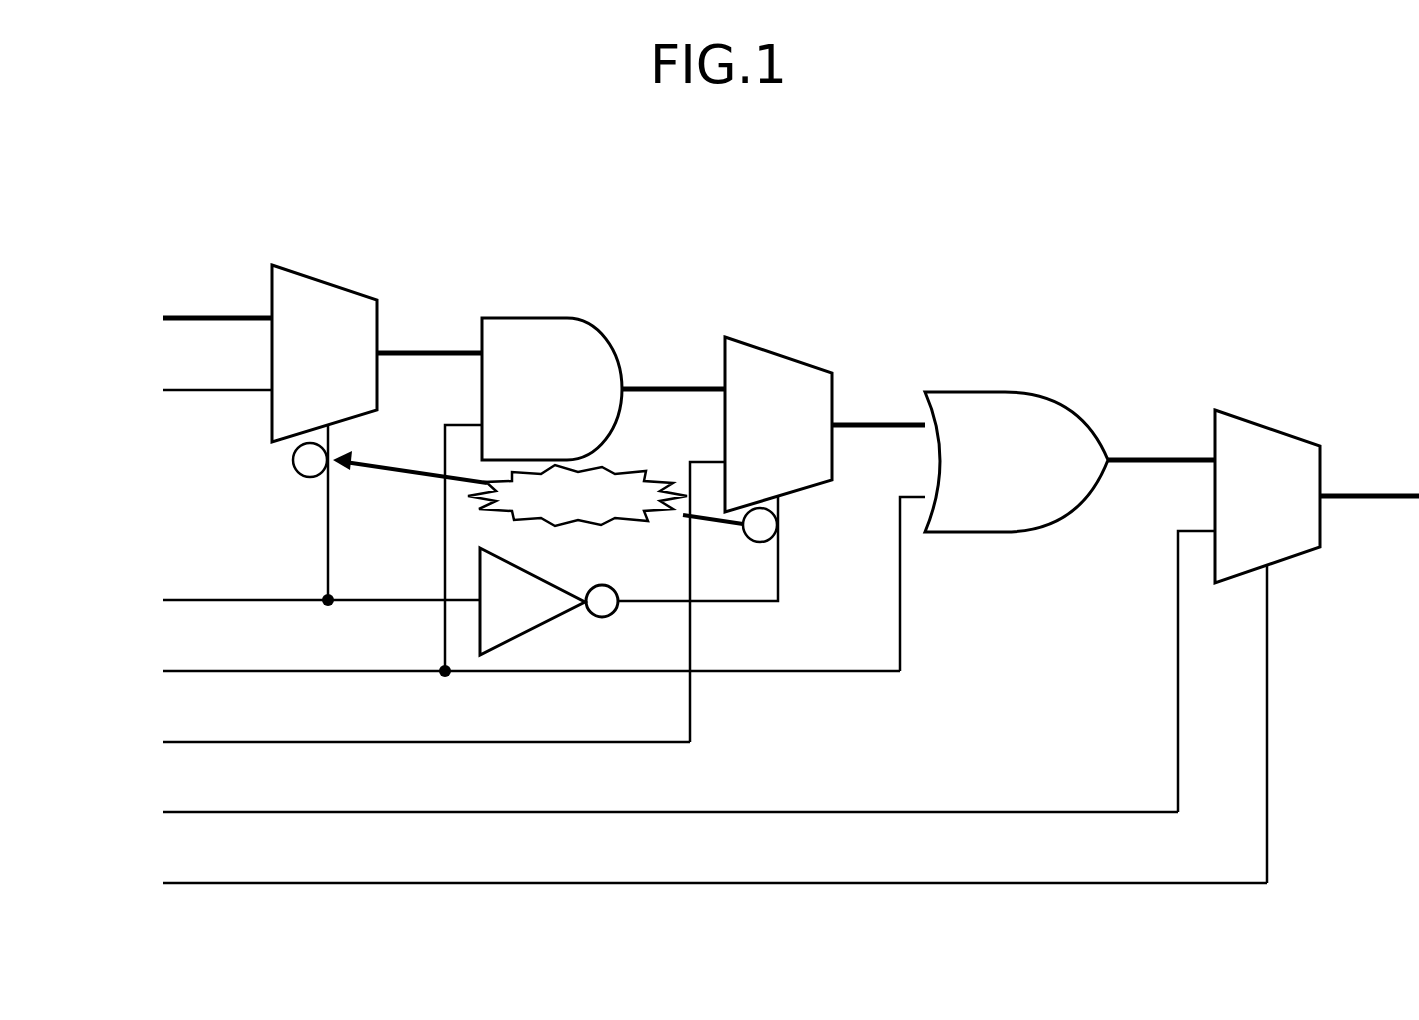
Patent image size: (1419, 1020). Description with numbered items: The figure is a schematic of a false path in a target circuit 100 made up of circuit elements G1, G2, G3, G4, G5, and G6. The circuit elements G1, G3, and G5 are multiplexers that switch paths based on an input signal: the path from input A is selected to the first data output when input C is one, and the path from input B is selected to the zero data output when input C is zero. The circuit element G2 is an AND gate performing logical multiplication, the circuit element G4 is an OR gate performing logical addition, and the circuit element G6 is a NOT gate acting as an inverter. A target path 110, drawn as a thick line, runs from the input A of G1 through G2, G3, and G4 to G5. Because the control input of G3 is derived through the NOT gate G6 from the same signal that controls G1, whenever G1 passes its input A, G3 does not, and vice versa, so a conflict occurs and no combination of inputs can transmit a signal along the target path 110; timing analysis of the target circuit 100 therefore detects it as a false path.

The target circuit 100 is at (1318, 263).
The target path 110 is at (163, 318).
The multiplexer G1 is at (323, 282).
The AND gate G2 is at (518, 318).
The multiplexer G3 is at (770, 352).
The OR gate G4 is at (960, 392).
The multiplexer G5 is at (1266, 424).
The NOT gate G6 is at (548, 620).